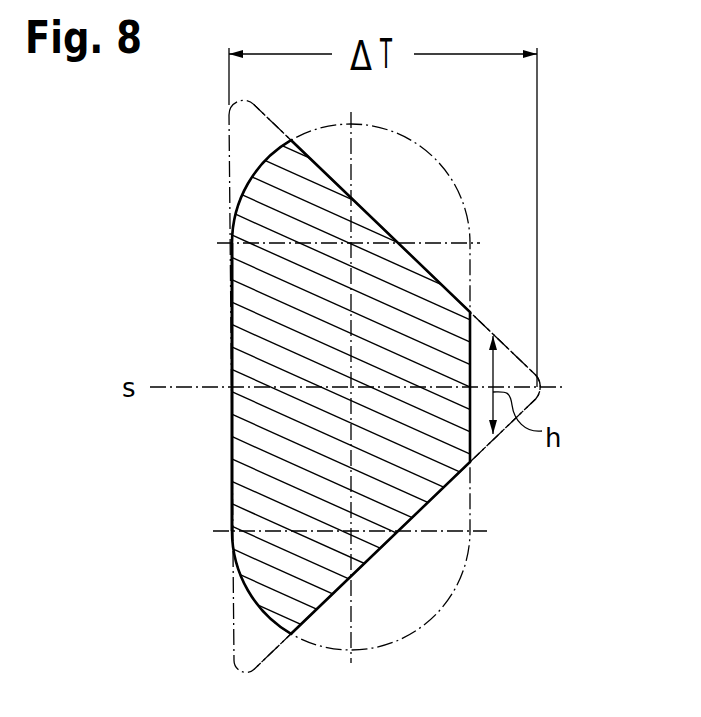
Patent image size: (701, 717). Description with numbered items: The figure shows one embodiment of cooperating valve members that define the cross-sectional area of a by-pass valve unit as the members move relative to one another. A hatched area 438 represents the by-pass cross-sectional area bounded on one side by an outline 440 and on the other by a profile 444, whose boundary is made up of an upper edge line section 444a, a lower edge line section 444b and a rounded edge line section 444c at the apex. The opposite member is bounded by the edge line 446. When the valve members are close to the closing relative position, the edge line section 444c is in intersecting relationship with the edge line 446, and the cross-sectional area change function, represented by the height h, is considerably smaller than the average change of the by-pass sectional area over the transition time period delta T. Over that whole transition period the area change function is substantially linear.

The hatched cross-sectional area (cam/thread profile) 438 is at (370, 224).
The stadium-shaped envelope outline 440 is at (428, 152).
The triangular profile outline 444 is at (441, 277).
The upper flank of triangular profile 444a is at (456, 300).
The lower flank of triangular profile 444b is at (442, 497).
The edge line section 444c is at (530, 375).
The edge line 446 is at (232, 308).